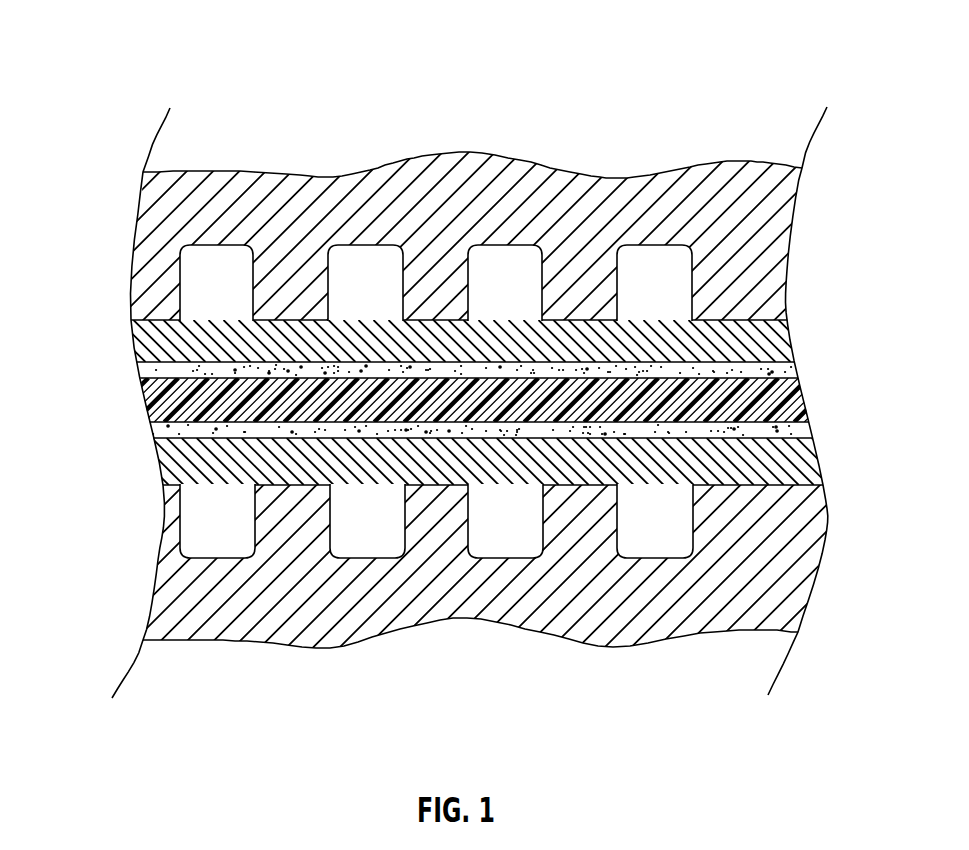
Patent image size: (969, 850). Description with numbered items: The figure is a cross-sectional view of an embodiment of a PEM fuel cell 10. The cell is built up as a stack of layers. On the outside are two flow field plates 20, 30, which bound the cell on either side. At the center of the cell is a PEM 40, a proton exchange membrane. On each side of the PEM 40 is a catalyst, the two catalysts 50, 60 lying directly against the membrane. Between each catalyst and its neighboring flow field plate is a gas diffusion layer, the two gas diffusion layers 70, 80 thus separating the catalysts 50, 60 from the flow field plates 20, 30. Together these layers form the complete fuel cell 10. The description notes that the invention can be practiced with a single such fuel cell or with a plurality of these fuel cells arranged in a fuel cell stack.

The PEM fuel cell 10 is at (847, 86).
The flow field plate 20 is at (484, 587).
The flow field plate 30 is at (484, 219).
The PEM 40 is at (451, 391).
The catalyst 50 is at (409, 349).
The catalyst 60 is at (411, 419).
The gas diffusion layer 70 is at (456, 461).
The gas diffusion layer 80 is at (448, 329).